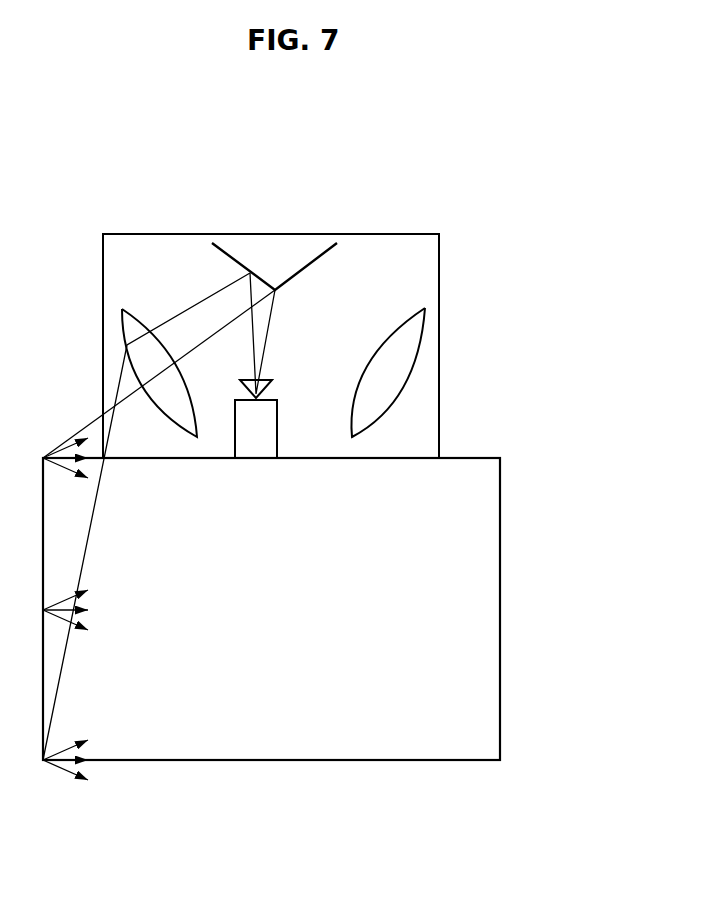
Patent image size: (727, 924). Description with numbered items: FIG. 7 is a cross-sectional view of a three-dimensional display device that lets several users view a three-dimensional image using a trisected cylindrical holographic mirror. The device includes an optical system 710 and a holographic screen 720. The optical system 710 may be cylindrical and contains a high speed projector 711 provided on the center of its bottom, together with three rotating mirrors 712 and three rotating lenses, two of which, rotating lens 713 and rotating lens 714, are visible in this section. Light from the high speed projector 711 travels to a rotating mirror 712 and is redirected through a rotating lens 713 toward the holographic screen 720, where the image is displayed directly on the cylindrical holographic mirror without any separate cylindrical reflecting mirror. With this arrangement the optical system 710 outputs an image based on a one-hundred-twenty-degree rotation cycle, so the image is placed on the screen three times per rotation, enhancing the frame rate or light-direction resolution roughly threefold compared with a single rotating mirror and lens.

The optical system 710 is at (439, 345).
The high speed projector 711 is at (277, 428).
The rotating mirror 712 is at (320, 258).
The rotating lens 713 is at (123, 323).
The rotating lens 714 is at (395, 390).
The holographic screen 720 is at (500, 619).